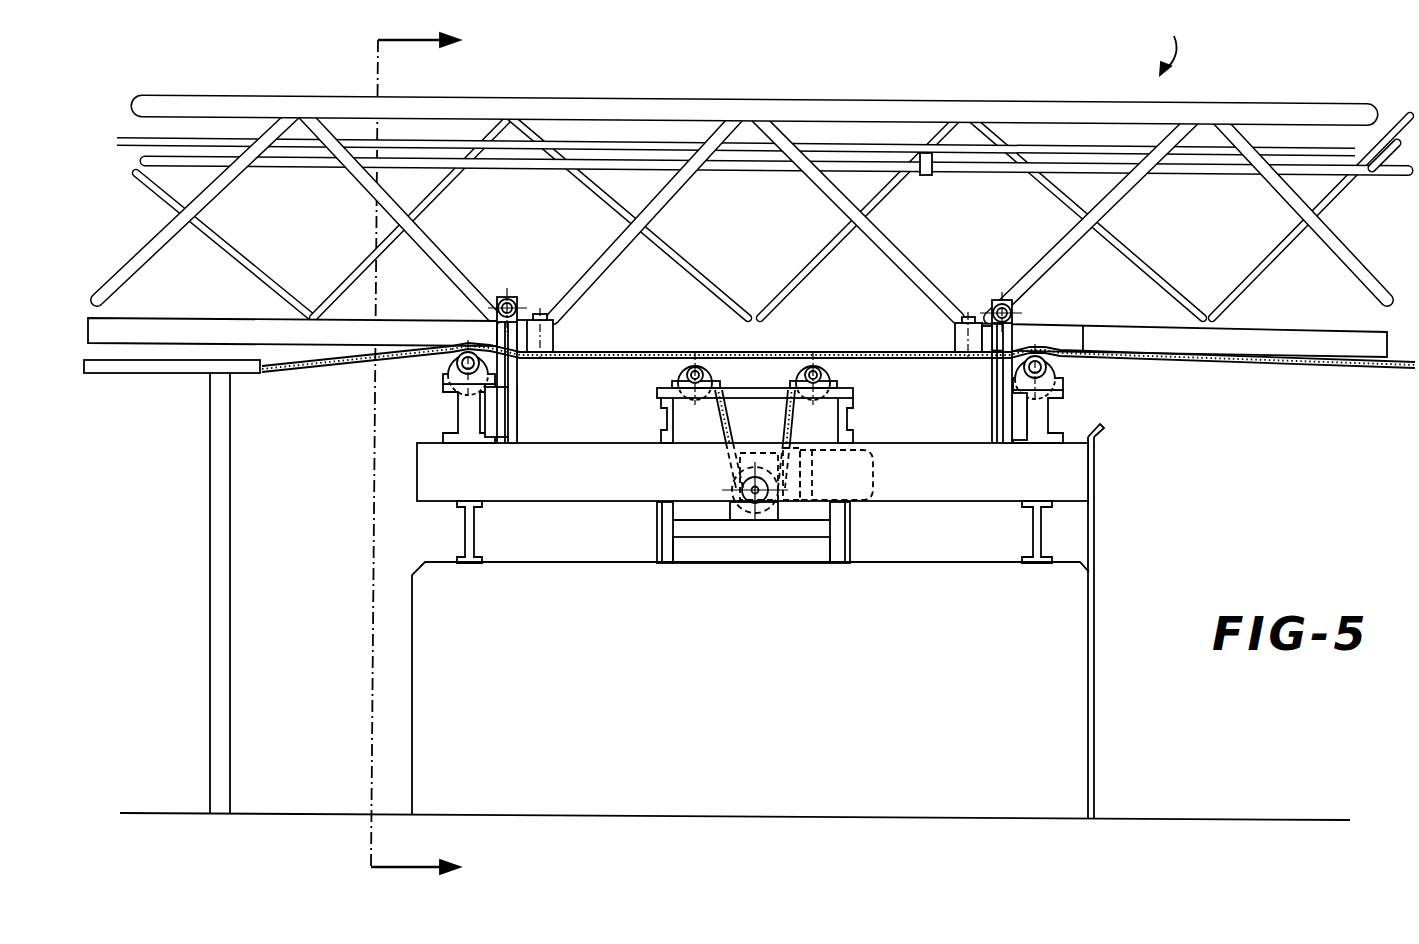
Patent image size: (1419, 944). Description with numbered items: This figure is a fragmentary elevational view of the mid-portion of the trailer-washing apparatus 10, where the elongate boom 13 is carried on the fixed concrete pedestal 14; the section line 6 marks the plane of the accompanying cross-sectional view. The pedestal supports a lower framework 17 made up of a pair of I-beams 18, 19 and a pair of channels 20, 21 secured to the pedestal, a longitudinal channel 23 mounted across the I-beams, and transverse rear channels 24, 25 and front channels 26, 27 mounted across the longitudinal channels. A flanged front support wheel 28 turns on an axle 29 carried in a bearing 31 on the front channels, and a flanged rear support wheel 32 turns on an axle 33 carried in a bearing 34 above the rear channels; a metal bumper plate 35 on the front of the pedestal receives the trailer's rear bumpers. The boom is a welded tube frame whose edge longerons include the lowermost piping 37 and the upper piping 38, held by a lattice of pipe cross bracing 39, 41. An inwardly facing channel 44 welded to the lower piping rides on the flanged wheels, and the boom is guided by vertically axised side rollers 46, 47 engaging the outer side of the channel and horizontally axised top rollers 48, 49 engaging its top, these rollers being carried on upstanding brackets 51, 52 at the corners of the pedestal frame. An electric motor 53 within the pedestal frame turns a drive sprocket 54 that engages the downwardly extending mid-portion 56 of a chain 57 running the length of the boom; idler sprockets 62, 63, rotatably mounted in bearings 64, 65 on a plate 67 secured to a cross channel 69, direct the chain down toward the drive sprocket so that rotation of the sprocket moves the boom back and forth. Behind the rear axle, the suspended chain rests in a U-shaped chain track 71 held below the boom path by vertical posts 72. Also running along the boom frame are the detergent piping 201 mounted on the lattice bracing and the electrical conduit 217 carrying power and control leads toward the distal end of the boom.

The section line 6- 6 is at (415, 440).
The apparatus 10 is at (1170, 34).
The boom 13 is at (602, 94).
The pedestal 14 is at (430, 658).
The lower framework 17 is at (733, 498).
The I-beam 18 is at (457, 532).
The I-beam 19 is at (1022, 527).
The channel 20 is at (660, 520).
The channel 21 is at (850, 520).
The longitudinal channel 23 is at (417, 452).
The rear channel 24 is at (448, 416).
The rear channel 25 is at (500, 422).
The front channel 26 is at (1012, 420).
The front channel 27 is at (1054, 420).
The front support wheel 28 is at (1058, 372).
The axle 29 is at (1037, 362).
The bearing 31 is at (1000, 377).
The rear support wheel 32 is at (462, 343).
The axle 33 is at (476, 345).
The bearing 34 is at (443, 372).
The bumper plate 35 is at (1096, 555).
The piping 37 is at (1318, 333).
The piping 38 is at (968, 100).
The cross bracing 39 is at (452, 183).
The cross bracing 41 is at (680, 185).
The channel 44 is at (195, 320).
The side roller 46 is at (957, 335).
The side roller 47 is at (552, 333).
The top roller 48 is at (1003, 300).
The top roller 49 is at (512, 296).
The upstanding bracket 51 is at (518, 390).
The upstanding bracket 52 is at (995, 410).
The motor 53 is at (872, 470).
The drive sprocket 54 is at (742, 512).
The mid-portion of chain 56 is at (718, 420).
The chain 57 is at (308, 372).
The idler sprocket 62 is at (680, 372).
The idler sprocket 63 is at (836, 373).
The bearing 64 is at (712, 370).
The bearing 65 is at (796, 373).
The plate 67 is at (745, 400).
The channel 69 is at (660, 420).
The chain track 71 is at (132, 378).
The vertical post 72 is at (210, 522).
The piping 201 is at (1402, 182).
The conduit 217 is at (1345, 156).